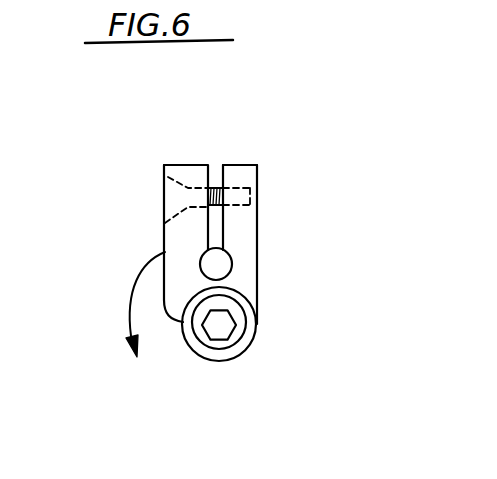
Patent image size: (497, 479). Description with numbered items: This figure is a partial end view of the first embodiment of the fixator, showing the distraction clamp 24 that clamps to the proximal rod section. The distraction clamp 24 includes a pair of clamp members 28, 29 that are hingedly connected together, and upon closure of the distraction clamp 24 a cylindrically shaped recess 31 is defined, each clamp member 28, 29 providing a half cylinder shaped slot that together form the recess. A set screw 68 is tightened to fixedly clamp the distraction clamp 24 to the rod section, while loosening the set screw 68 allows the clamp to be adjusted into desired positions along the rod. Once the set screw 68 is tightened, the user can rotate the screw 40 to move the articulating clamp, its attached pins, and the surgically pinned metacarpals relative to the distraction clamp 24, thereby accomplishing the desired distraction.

The distraction clamp 24 is at (193, 350).
The clamp member 28 is at (178, 236).
The clamp member 29 is at (243, 223).
The cylindrically shaped recess 31 is at (224, 267).
The screw 40 is at (231, 343).
The set screw 68 is at (215, 185).